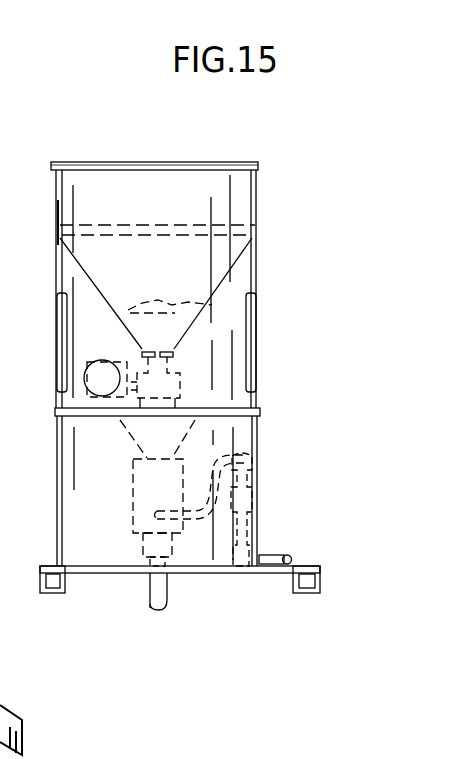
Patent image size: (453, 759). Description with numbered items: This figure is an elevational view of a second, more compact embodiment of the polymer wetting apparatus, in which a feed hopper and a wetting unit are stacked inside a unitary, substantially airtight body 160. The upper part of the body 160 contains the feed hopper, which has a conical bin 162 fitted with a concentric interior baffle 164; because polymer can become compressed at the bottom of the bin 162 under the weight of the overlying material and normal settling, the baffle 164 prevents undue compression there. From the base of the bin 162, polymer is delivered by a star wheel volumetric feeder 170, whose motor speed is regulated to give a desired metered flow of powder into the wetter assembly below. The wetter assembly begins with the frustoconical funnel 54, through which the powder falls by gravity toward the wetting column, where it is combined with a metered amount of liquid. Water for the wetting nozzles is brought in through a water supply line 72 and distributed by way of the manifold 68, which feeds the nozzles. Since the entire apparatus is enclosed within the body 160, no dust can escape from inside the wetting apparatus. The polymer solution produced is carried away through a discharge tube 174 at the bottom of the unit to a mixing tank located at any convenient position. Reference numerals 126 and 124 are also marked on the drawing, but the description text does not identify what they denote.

The top cover plate 126 is at (197, 162).
The liquid level line 124 is at (206, 227).
The conical bin 162 is at (229, 278).
The concentric interior baffle 164 is at (215, 309).
The star wheel volumetric feeder 170 is at (182, 382).
The water supply line 72 is at (86, 365).
The funnel 54 is at (130, 431).
The manifold 68 is at (133, 503).
The body 160 is at (259, 450).
The discharge tube 174 is at (170, 600).